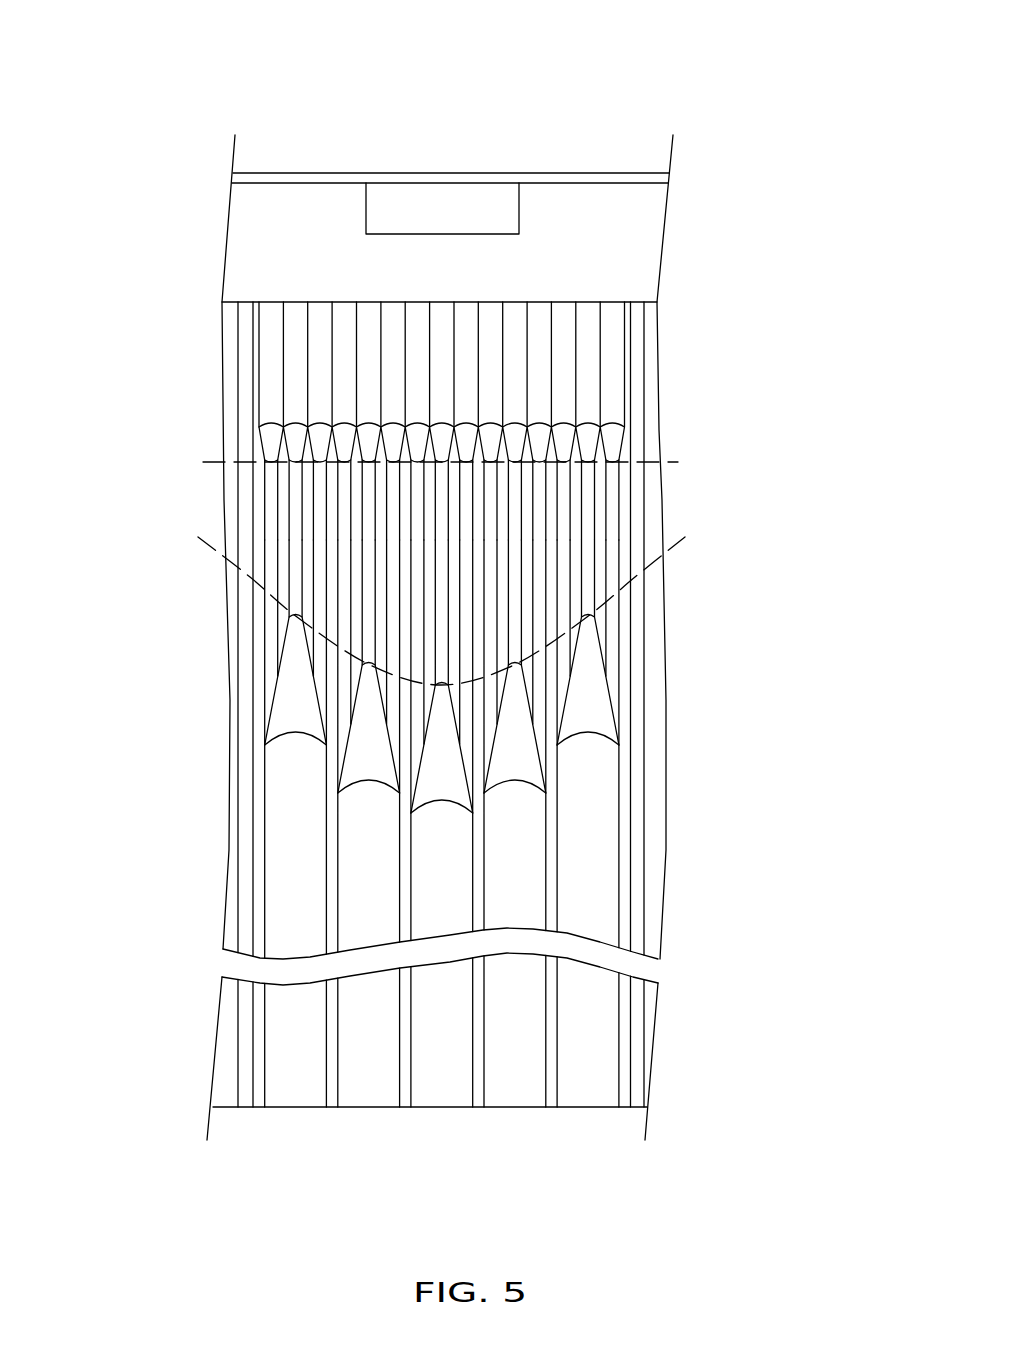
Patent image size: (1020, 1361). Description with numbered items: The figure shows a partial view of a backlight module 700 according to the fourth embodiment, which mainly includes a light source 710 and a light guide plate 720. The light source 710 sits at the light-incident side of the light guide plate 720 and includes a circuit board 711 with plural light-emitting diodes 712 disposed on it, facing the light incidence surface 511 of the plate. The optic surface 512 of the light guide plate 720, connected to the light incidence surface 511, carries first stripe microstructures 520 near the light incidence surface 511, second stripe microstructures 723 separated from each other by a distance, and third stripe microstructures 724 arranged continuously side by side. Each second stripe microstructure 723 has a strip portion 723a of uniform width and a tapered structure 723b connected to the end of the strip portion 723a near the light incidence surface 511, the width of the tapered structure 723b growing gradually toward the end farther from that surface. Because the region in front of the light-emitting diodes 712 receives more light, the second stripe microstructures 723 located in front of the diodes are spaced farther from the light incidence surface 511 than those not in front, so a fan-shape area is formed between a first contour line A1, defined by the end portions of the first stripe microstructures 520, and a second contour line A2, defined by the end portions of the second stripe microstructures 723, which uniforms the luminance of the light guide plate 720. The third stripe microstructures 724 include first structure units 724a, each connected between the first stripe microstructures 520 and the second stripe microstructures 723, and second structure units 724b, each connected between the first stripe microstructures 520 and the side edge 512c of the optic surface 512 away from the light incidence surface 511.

The backlight module 700 is at (140, 90).
The light source 710 is at (450, 123).
The circuit board 711 is at (632, 177).
The light-emitting diodes 712 is at (442, 160).
The light incidence surface 511 is at (613, 300).
The first stripe microstructures 520 is at (610, 358).
The light guide plate 720 is at (478, 745).
The optic surface 512 is at (267, 652).
The side edge 512c is at (515, 1108).
The third stripe microstructures 724 is at (568, 636).
The first structure units 724a is at (526, 676).
The second structure units 724b is at (551, 515).
The second stripe microstructures 723 is at (568, 861).
The strip portion 723a is at (526, 919).
The tapered structure 723b is at (595, 707).
The first contour line A1 is at (217, 467).
The second contour line A2 is at (207, 548).